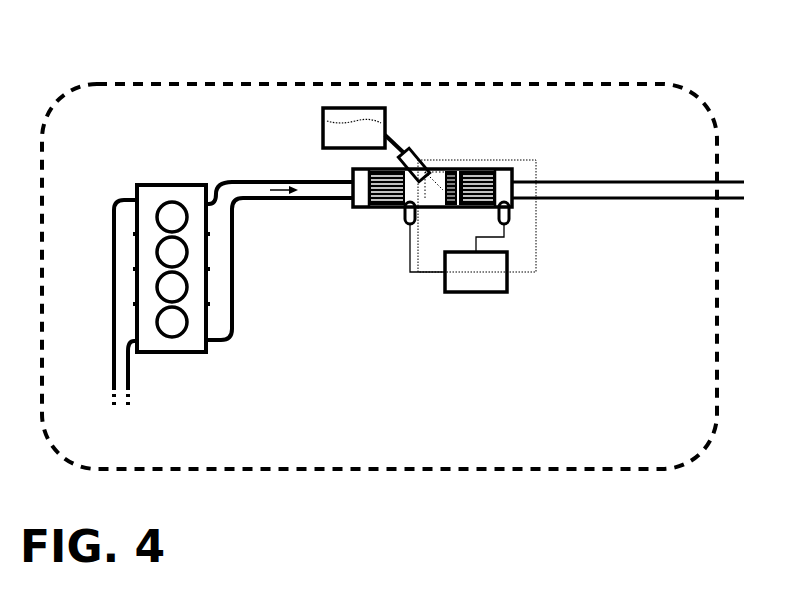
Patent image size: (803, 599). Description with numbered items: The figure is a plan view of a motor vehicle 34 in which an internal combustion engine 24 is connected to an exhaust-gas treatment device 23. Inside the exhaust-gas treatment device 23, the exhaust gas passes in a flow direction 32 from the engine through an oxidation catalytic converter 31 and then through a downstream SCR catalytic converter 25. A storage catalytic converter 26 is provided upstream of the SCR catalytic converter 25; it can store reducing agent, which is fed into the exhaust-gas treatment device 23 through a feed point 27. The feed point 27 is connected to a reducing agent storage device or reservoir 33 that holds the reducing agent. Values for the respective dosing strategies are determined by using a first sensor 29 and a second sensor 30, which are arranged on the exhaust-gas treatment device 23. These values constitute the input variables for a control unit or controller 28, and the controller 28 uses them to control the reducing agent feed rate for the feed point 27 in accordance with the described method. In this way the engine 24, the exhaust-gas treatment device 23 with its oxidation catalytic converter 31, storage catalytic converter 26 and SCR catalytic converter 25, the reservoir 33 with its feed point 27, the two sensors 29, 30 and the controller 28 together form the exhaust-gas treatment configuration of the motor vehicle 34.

The exhaust-gas treatment device 23 is at (461, 120).
The internal combustion engine 24 is at (148, 185).
The SCR catalytic converter 25 is at (497, 178).
The storage catalytic converter 26 is at (460, 172).
The feed point 27 is at (410, 152).
The control unit 28 is at (502, 292).
The first sensor 29 is at (416, 214).
The second sensor 30 is at (510, 216).
The oxidation catalytic converter 31 is at (362, 176).
The flow direction 32 is at (285, 183).
The reducing agent storage device 33 is at (353, 108).
The motor vehicle 34 is at (490, 82).